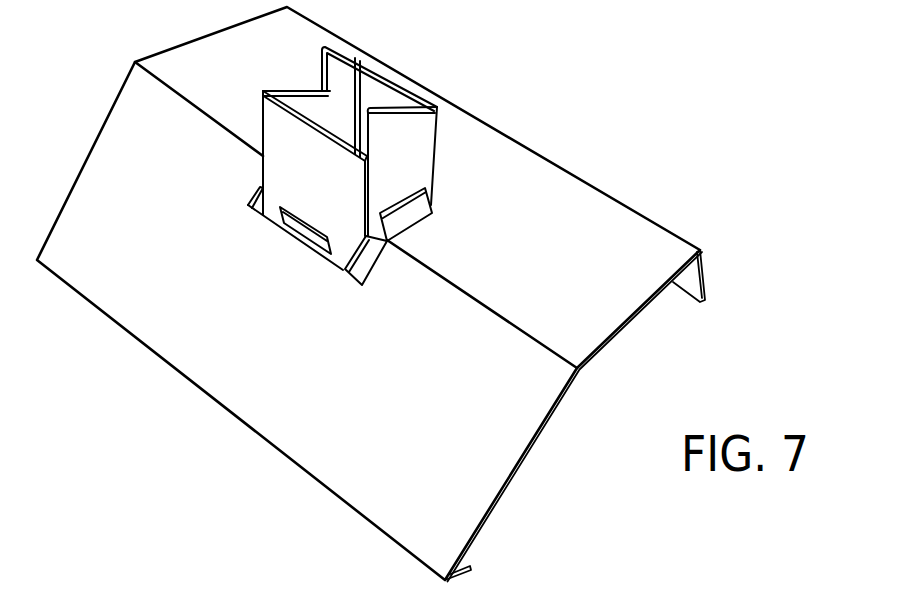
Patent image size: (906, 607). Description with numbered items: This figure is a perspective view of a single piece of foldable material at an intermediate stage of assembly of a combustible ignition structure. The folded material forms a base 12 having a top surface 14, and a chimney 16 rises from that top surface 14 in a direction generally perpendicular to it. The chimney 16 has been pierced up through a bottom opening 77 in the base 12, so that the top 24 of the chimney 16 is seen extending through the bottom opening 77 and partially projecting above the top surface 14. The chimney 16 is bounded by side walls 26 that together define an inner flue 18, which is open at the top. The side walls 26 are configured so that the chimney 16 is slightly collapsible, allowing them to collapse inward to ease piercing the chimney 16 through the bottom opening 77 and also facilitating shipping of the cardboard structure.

The base 12 is at (658, 297).
The top surface 14 is at (593, 220).
The chimney 16 is at (353, 147).
The inner flue 18 is at (384, 93).
The top 24 is at (441, 158).
The side wall 26 is at (277, 135).
The bottom opening 77 is at (273, 215).